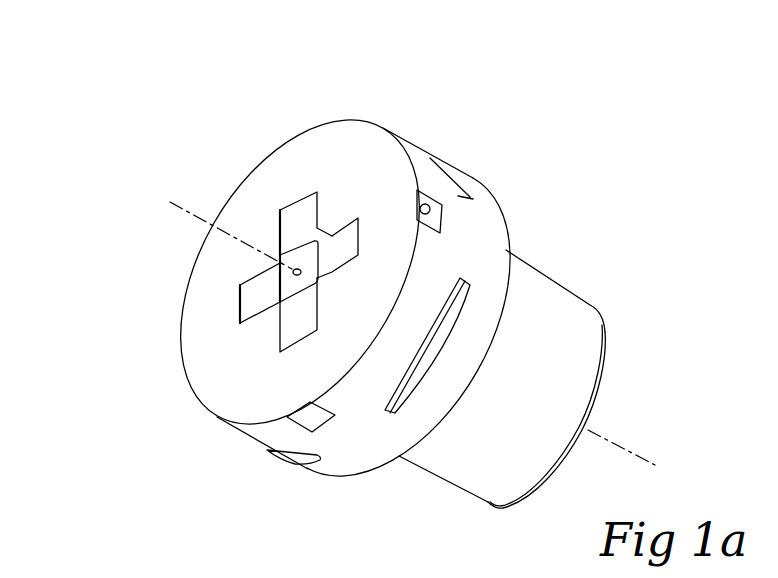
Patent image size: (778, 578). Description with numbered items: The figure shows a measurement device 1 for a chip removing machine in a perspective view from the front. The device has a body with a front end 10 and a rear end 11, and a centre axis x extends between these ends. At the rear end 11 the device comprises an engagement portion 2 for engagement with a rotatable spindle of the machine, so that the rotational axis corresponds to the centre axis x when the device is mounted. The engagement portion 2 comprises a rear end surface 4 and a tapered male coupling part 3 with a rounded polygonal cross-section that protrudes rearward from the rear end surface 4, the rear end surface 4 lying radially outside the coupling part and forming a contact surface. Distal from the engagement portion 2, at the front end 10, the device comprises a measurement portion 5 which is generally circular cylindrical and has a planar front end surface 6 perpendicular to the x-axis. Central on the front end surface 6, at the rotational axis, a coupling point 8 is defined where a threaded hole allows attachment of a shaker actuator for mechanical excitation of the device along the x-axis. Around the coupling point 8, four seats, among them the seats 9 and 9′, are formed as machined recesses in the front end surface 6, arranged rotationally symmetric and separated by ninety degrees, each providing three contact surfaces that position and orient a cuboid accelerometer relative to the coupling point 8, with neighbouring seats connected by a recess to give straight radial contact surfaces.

The measurement device 1 is at (129, 120).
The engagement portion 2 is at (633, 347).
The tapered male coupling part 3 is at (533, 295).
The rear end surface 4 is at (503, 223).
The measurement portion 5 is at (190, 444).
The front end surface 6 is at (285, 157).
The coupling point 8 is at (293, 270).
The seat 9 is at (284, 212).
The seat 9′ is at (338, 240).
The front end 10 is at (142, 342).
The rear end 11 is at (631, 298).